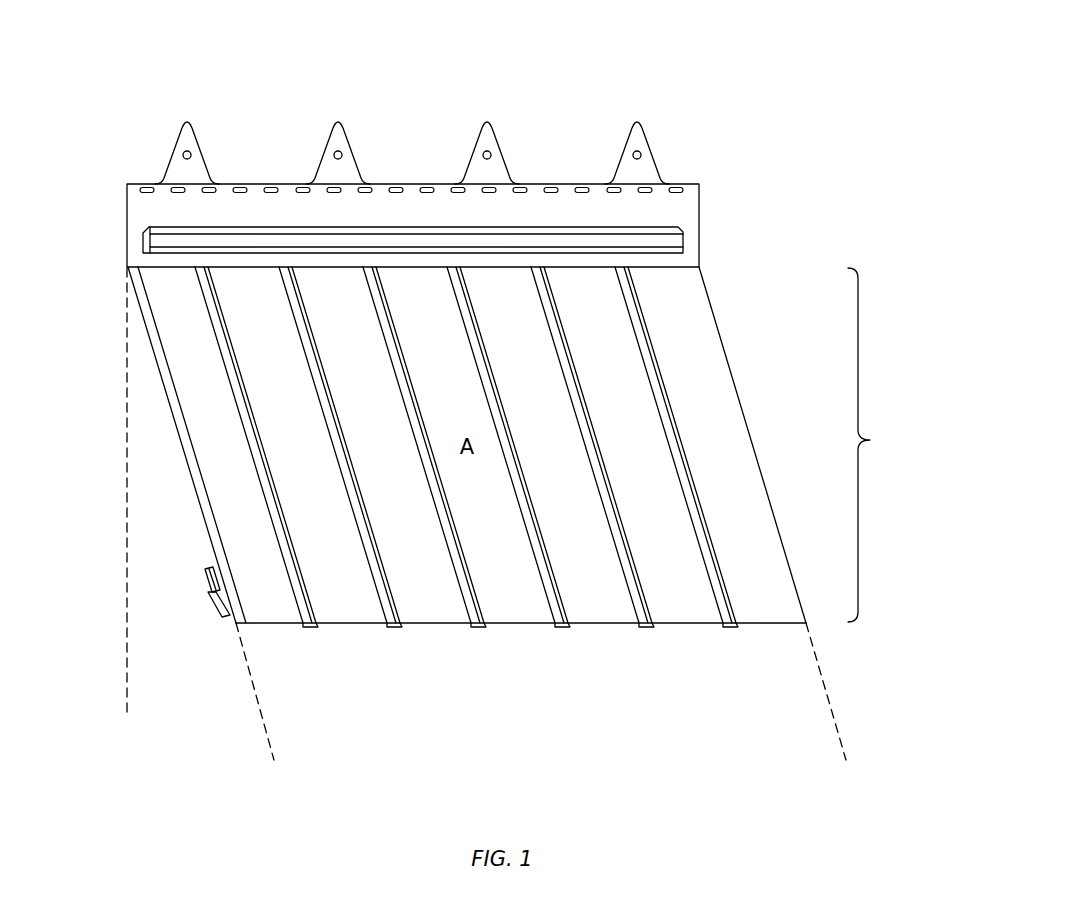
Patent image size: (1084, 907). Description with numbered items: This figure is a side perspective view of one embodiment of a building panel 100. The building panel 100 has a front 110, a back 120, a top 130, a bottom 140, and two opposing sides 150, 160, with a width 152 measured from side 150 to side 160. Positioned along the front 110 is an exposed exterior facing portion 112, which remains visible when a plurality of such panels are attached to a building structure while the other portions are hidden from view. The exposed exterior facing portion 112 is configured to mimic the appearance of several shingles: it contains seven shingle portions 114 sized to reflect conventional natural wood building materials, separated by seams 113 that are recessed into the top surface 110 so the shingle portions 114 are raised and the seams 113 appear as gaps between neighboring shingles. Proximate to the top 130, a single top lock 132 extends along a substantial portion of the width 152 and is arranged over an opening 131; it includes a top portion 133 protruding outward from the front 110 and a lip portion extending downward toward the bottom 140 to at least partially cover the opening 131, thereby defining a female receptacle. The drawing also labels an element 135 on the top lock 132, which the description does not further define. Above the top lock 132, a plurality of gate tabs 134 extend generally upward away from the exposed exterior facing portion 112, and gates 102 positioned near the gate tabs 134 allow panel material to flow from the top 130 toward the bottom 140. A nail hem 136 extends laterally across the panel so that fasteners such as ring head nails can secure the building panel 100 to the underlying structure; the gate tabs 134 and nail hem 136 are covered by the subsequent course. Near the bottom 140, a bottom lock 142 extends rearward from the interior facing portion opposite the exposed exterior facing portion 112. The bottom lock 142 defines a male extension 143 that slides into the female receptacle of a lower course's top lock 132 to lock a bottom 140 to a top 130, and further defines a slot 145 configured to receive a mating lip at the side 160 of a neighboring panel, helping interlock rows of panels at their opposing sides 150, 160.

The building panel 100 is at (681, 46).
The gates 102 is at (182, 154).
The front 110 is at (728, 374).
The exposed exterior facing portion 112 is at (886, 445).
The seams 113 is at (315, 627).
The shingle portions 114 is at (259, 626).
The back 120 is at (186, 482).
The top 130 is at (447, 77).
The opening 131 is at (138, 240).
The top lock 132 is at (232, 240).
The top portion 133 is at (276, 230).
The gate tabs 134 is at (176, 134).
The channel lip 135 is at (693, 237).
The nail hem 136 is at (399, 185).
The bottom 140 is at (583, 654).
The bottom lock 142 is at (217, 630).
The male extension 143 is at (206, 577).
The slot 145 is at (198, 597).
The side 150 is at (206, 525).
The width 152 is at (833, 747).
The side 160 is at (746, 422).